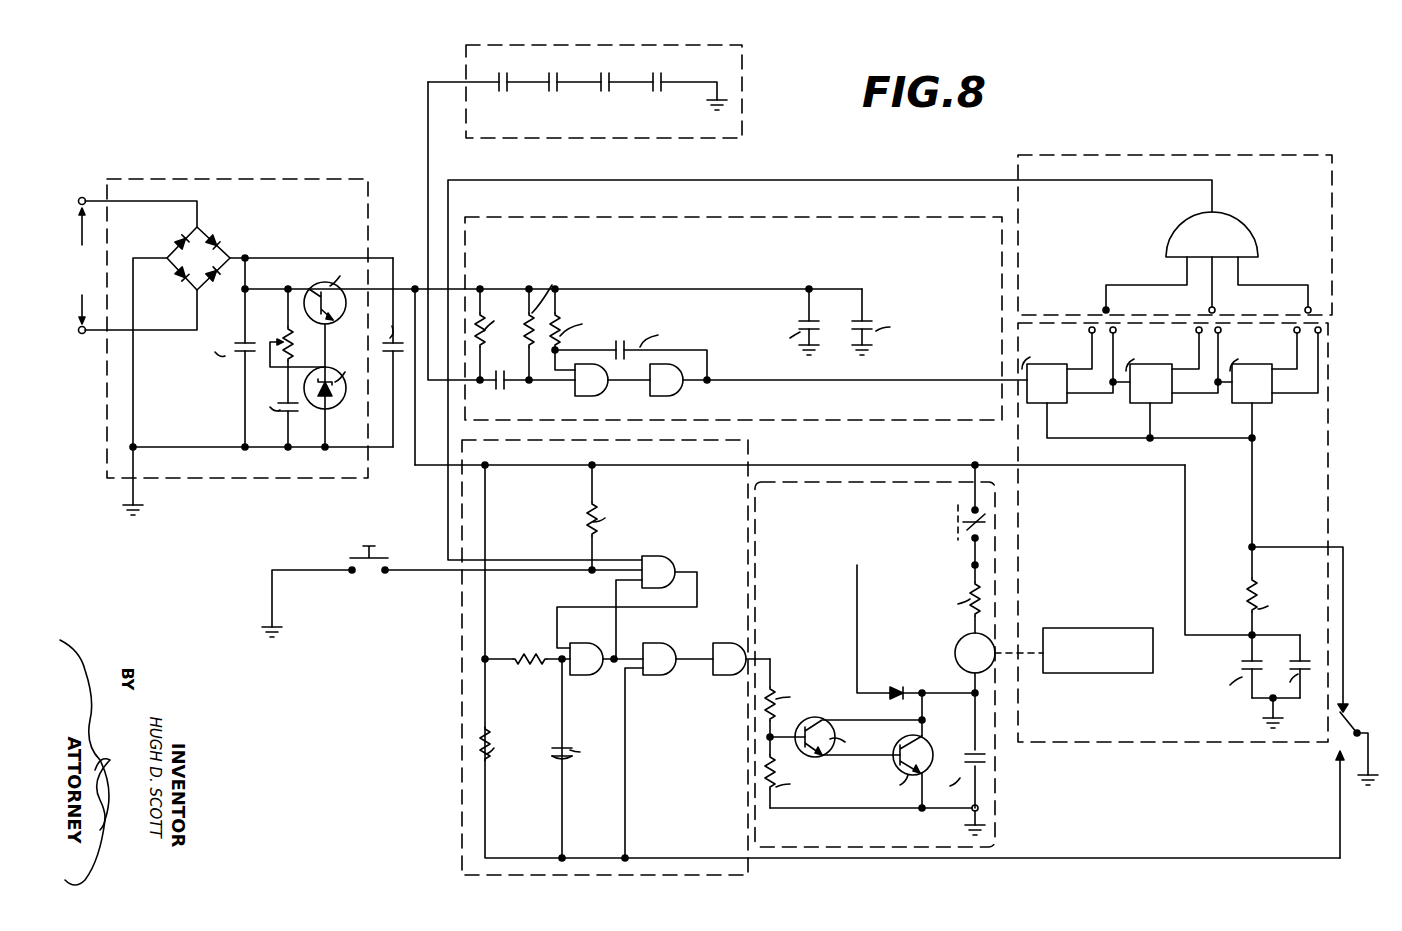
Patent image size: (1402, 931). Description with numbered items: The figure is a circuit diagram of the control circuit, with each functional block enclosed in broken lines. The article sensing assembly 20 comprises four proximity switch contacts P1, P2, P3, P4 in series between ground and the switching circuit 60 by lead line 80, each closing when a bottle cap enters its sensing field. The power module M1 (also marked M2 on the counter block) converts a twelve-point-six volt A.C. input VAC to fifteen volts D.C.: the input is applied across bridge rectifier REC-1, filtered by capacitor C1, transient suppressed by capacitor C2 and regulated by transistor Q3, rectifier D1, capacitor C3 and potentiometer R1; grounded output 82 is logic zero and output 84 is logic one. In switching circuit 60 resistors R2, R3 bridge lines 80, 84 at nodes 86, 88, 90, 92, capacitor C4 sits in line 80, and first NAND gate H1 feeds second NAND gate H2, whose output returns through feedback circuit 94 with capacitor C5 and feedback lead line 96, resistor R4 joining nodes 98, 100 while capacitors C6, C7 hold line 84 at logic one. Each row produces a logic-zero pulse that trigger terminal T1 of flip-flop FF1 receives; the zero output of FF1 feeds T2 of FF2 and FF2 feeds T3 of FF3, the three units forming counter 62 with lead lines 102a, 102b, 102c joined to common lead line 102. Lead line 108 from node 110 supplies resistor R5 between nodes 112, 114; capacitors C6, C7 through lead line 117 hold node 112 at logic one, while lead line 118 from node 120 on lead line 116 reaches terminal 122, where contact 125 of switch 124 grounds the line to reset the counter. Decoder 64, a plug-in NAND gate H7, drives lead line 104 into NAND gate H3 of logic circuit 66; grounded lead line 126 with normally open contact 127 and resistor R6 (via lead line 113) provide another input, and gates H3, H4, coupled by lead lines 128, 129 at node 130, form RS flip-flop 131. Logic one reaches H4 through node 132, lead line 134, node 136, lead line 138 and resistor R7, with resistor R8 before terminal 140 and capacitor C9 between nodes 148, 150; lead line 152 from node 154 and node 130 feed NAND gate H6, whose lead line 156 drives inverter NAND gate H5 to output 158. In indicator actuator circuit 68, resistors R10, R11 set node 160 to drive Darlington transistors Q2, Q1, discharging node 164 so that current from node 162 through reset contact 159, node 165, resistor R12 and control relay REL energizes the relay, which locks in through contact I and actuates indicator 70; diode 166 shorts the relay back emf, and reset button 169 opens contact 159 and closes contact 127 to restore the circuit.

The article sensing assembly 20 is at (606, 91).
The switching circuit 60 is at (848, 218).
The counter circuit 62 is at (1330, 366).
The decoder circuit 64 is at (1332, 236).
The logic circuit 66 is at (458, 678).
The indicator actuator circuit 68 is at (1000, 836).
The indicator 70 is at (1122, 675).
The lead line 80 is at (428, 145).
The grounded output 82 is at (333, 447).
The logic 1 source lead line 84 is at (405, 284).
The node 86 is at (480, 287).
The node 88 is at (480, 390).
The node 90 is at (529, 287).
The node 92 is at (540, 393).
The feedback circuit 94 is at (705, 332).
The feedback lead line 96 is at (715, 372).
The node 98 is at (563, 287).
The node 100 is at (558, 349).
The common lead line 102 is at (1120, 438).
The lead line 102a is at (1066, 429).
The lead line 102b is at (1174, 427).
The lead line 102c is at (1271, 433).
The lead line 104 is at (958, 180).
The lead line 108 is at (694, 470).
The node 110 is at (419, 283).
The node 112 is at (1255, 632).
The lead line 113 is at (595, 489).
The node 114 is at (1260, 442).
The lead line 116 is at (1263, 502).
The lead line 117 is at (1268, 712).
The lead line 118 is at (1348, 562).
The node 120 is at (1248, 547).
The terminal 122 is at (1350, 715).
The switch 124 is at (1360, 708).
The contact 125 is at (1340, 740).
The grounded lead line 126 is at (411, 572).
The normally open contact 127 is at (592, 570).
The lead line 128 is at (692, 598).
The lead line 129 is at (616, 626).
The node 130 is at (614, 659).
The RS flip-flop 131 is at (703, 568).
The node 132 is at (486, 464).
The lead line 134 is at (485, 523).
The node 136 is at (492, 643).
The lead line 138 is at (506, 661).
The terminal 140 is at (1338, 755).
The node 148 is at (560, 670).
The node 150 is at (563, 856).
The lead line 152 is at (625, 770).
The node 154 is at (628, 856).
The lead line 156 is at (702, 659).
The output 158 is at (762, 658).
The normally closed reset contact 159 is at (970, 514).
The node 160 is at (767, 738).
The node 162 is at (979, 465).
The node 164 is at (974, 694).
The node 165 is at (973, 565).
The diode 166 is at (900, 691).
The reset button 169 is at (372, 548).
The power module M1 is at (240, 178).
The counter module M2 is at (1075, 745).
The bridge rectifier REC-1 is at (263, 326).
The transistor Q1 is at (905, 771).
The transistor Q2 is at (858, 737).
The transistor Q3 is at (329, 313).
The rectifier D1 is at (330, 400).
The potentiometer R1 is at (330, 344).
The resistor R2 is at (493, 334).
The resistor R3 is at (542, 323).
The resistor R4 is at (577, 319).
The resistor R5 is at (1267, 591).
The resistor R6 is at (606, 536).
The resistor R7 is at (541, 647).
The resistor R8 is at (497, 744).
The resistor R10 is at (792, 711).
The resistor R11 is at (793, 772).
The resistor R12 is at (960, 607).
The capacitor C1 is at (390, 352).
The capacitor C2 is at (277, 418).
The capacitor C3 is at (229, 351).
The capacitor C4 is at (495, 391).
The capacitor C5 is at (631, 349).
The capacitor C6 is at (1017, 492).
The capacitor C7 is at (1081, 495).
The capacitor C9 is at (577, 752).
The first NAND gate H1 is at (612, 380).
The second NAND gate H2 is at (666, 380).
The NAND gate H3 is at (658, 572).
The NAND gate H4 is at (606, 659).
The NAND gate H5 is at (741, 659).
The NAND gate H6 is at (678, 659).
The plug-in NAND gate H7 is at (1215, 263).
The flip-flop unit FF1 is at (1078, 368).
The flip-flop unit FF2 is at (1181, 368).
The flip-flop unit FF3 is at (1275, 368).
The trigger terminal T1 is at (1078, 346).
The trigger terminal T2 is at (1181, 347).
The trigger terminal T3 is at (1280, 348).
The control relay REL is at (975, 663).
The contact I is at (962, 750).
The proximity switch contact P1 is at (503, 93).
The proximity switch contact P2 is at (553, 93).
The proximity switch contact P3 is at (605, 93).
The proximity switch contact P4 is at (657, 93).
The 12.6 VAC input VAC is at (125, 266).